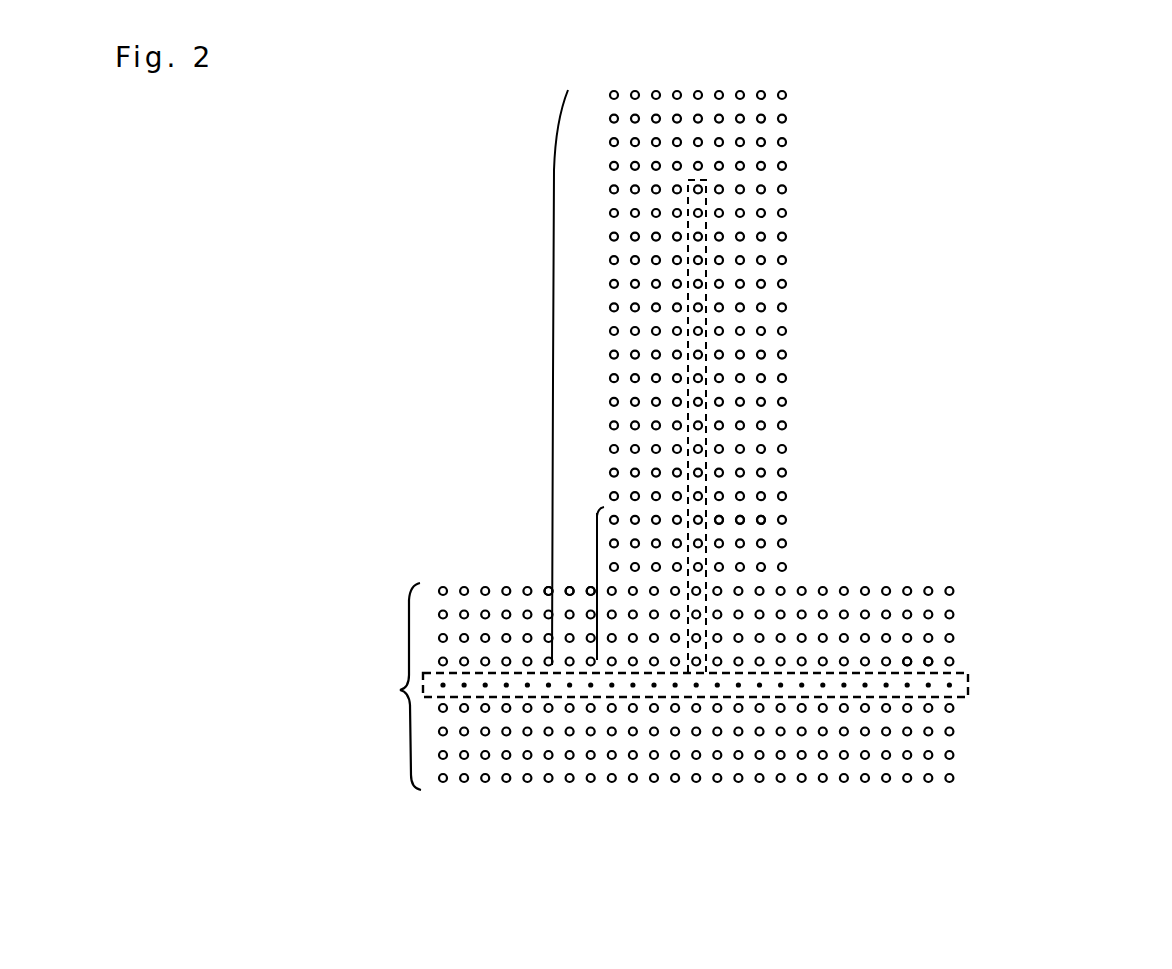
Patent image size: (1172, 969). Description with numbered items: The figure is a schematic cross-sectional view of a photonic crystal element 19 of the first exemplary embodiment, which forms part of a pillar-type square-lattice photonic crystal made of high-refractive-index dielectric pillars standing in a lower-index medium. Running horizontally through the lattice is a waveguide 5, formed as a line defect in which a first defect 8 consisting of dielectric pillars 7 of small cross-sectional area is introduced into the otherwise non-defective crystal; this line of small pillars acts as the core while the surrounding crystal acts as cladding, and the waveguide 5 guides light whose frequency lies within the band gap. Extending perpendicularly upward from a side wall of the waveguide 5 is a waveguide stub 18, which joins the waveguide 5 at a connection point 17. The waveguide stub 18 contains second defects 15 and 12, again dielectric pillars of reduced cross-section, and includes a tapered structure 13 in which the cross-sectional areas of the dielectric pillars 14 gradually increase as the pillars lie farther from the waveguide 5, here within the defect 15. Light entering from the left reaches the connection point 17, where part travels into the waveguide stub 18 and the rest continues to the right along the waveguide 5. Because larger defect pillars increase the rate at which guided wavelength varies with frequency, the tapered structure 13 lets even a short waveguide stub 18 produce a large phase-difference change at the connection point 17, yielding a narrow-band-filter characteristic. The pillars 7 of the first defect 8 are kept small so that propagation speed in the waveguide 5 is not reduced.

The waveguide 5 is at (402, 688).
The dielectric pillars 7 is at (907, 683).
The first defect 8 is at (970, 688).
The second defect 12 is at (707, 252).
The tapered structure 13 is at (595, 550).
The dielectric pillars 14 is at (693, 593).
The second defect 15 is at (698, 550).
The connection point 17 is at (684, 666).
The waveguide stub 18 is at (552, 380).
The photonic crystal element 19 is at (372, 424).